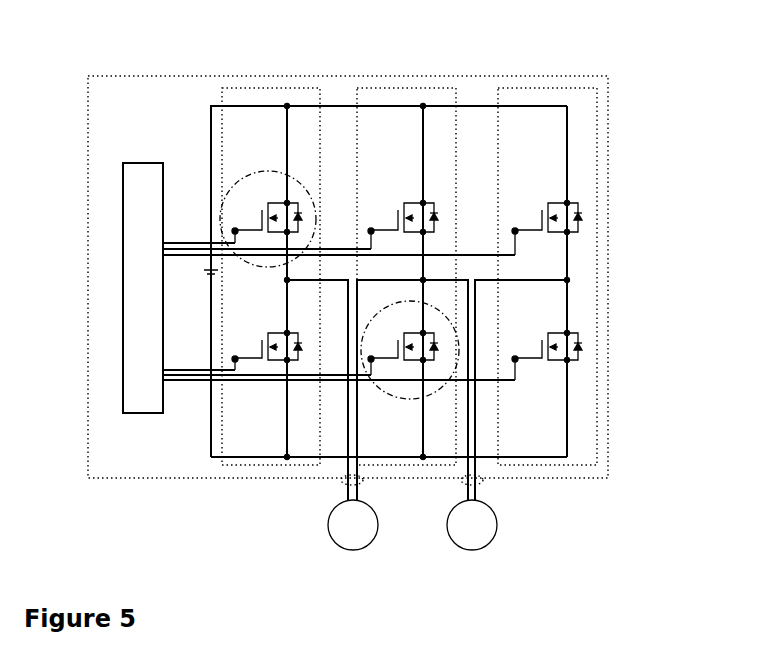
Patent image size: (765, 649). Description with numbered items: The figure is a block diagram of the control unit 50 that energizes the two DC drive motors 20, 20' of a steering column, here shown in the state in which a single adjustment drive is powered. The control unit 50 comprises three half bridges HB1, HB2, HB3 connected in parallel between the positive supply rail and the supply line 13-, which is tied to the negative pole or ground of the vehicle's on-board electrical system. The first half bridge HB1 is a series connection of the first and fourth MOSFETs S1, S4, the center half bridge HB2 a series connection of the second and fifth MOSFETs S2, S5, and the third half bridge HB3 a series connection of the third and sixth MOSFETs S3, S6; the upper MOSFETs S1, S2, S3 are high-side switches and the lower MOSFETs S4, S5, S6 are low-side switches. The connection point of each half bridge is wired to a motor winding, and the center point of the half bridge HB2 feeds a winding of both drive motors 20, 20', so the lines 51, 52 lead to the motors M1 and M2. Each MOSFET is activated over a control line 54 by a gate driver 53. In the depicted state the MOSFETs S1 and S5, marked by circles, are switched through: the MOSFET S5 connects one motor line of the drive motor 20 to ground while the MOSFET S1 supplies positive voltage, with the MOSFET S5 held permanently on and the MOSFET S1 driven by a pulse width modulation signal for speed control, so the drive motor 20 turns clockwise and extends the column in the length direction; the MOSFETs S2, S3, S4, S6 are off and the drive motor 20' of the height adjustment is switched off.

The control unit 50 is at (610, 265).
The gate driver 53 is at (133, 229).
The control line 54 is at (192, 255).
The supply line 13- is at (209, 427).
The first half bridge HB1 is at (240, 88).
The second half bridge HB2 is at (382, 88).
The third half bridge HB3 is at (517, 88).
The first MOSFET S1 is at (268, 219).
The second MOSFET S2 is at (403, 213).
The third MOSFET S3 is at (547, 216).
The fourth MOSFET S4 is at (267, 338).
The fifth MOSFET S5 is at (410, 350).
The sixth MOSFET S6 is at (547, 343).
The line 51 is at (360, 482).
The line 52 is at (480, 482).
The drive motor 20 is at (325, 546).
The drive motor 20' is at (495, 540).
The first motor M1 is at (353, 525).
The second motor M2 is at (515, 562).